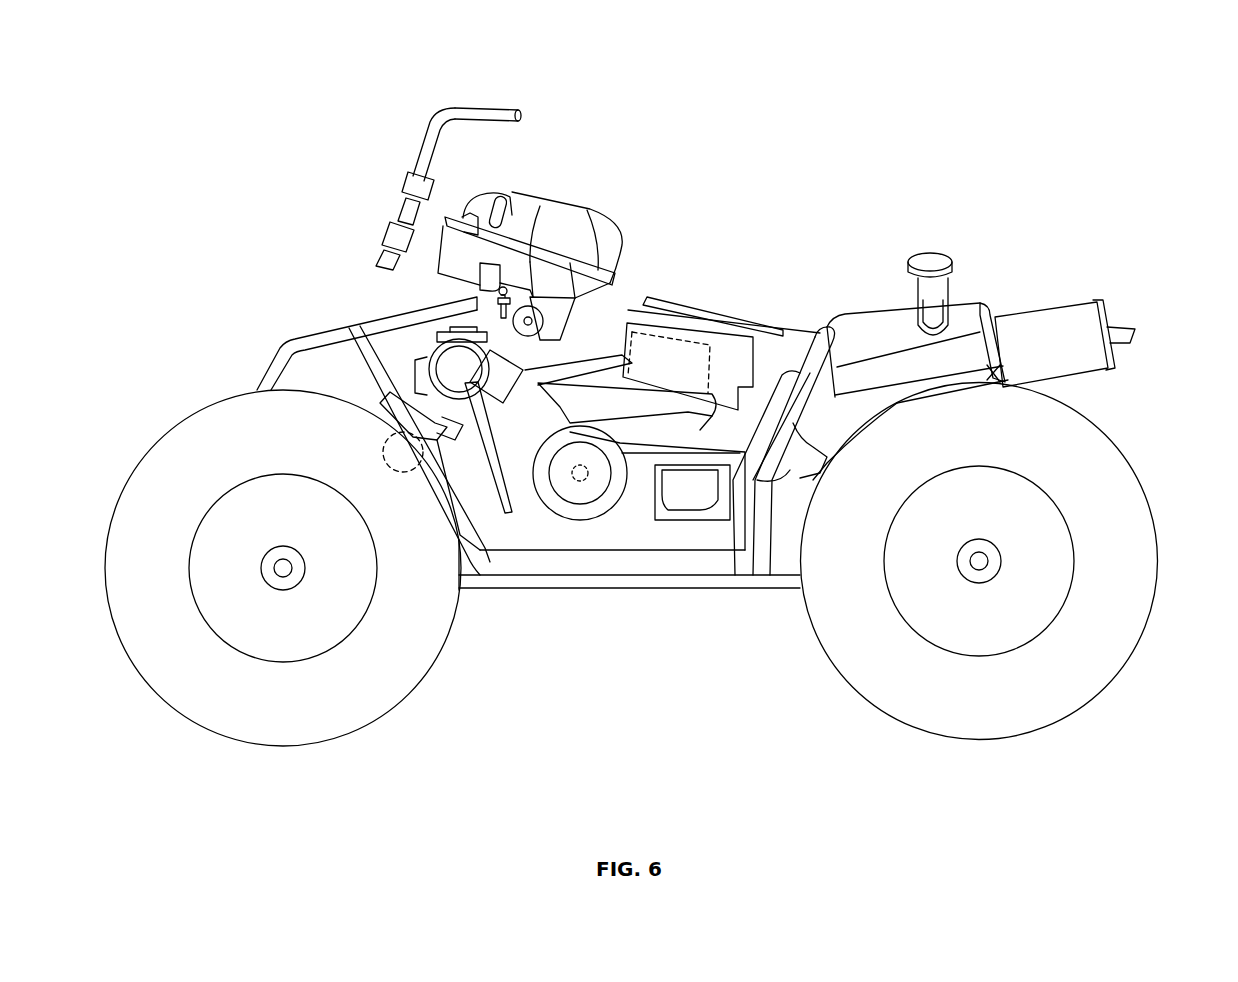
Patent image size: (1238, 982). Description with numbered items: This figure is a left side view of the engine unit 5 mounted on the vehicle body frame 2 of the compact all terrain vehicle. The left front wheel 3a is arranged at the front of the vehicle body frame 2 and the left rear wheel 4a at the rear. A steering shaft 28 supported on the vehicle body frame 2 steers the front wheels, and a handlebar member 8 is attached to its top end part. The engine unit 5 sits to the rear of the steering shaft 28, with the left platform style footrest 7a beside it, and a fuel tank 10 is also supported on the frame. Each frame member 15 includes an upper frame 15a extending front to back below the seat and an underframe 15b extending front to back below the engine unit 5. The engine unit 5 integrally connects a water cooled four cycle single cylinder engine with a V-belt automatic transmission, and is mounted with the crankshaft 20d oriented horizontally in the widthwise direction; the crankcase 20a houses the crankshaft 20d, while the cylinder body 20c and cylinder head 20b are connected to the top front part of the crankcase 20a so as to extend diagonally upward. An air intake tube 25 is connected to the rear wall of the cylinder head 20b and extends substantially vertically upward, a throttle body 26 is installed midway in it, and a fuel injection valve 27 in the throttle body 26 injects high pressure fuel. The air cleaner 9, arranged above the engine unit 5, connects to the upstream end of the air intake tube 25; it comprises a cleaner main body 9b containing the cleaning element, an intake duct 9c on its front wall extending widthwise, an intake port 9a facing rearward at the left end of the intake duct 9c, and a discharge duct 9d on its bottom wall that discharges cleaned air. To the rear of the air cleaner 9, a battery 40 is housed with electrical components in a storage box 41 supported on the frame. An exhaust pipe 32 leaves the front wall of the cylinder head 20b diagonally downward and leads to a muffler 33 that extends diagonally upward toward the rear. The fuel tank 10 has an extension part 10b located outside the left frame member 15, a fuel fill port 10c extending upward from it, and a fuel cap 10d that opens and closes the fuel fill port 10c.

The vehicle body frame 2 is at (681, 598).
The left front wheel 3a is at (188, 398).
The left rear wheel 4a is at (1140, 470).
The engine unit 5 is at (408, 352).
The left footrest 7a is at (607, 556).
The handlebar member 8 is at (499, 106).
The air cleaner 9 is at (608, 214).
The intake port 9a is at (490, 198).
The cleaner main body 9b is at (582, 207).
The intake duct 9c is at (470, 208).
The discharge duct 9d is at (543, 225).
The fuel tank 10 is at (866, 304).
The extension part 10b is at (1003, 305).
The fuel fill port 10c is at (968, 300).
The fuel cap 10d is at (929, 250).
The frame member 15 is at (270, 344).
The upper frame 15a is at (800, 326).
The underframe 15b is at (724, 590).
The crankcase 20a is at (620, 434).
The cylinder head 20b is at (555, 393).
The cylinder body 20c is at (451, 431).
The crankshaft 20d is at (580, 482).
The air intake tube 25 is at (535, 352).
The throttle body 26 is at (546, 326).
The fuel injection valve 27 is at (480, 300).
The steering shaft 28 is at (384, 248).
The exhaust pipe 32 is at (400, 418).
The muffler 33 is at (1043, 300).
The battery 40 is at (682, 300).
The storage box 41 is at (632, 308).